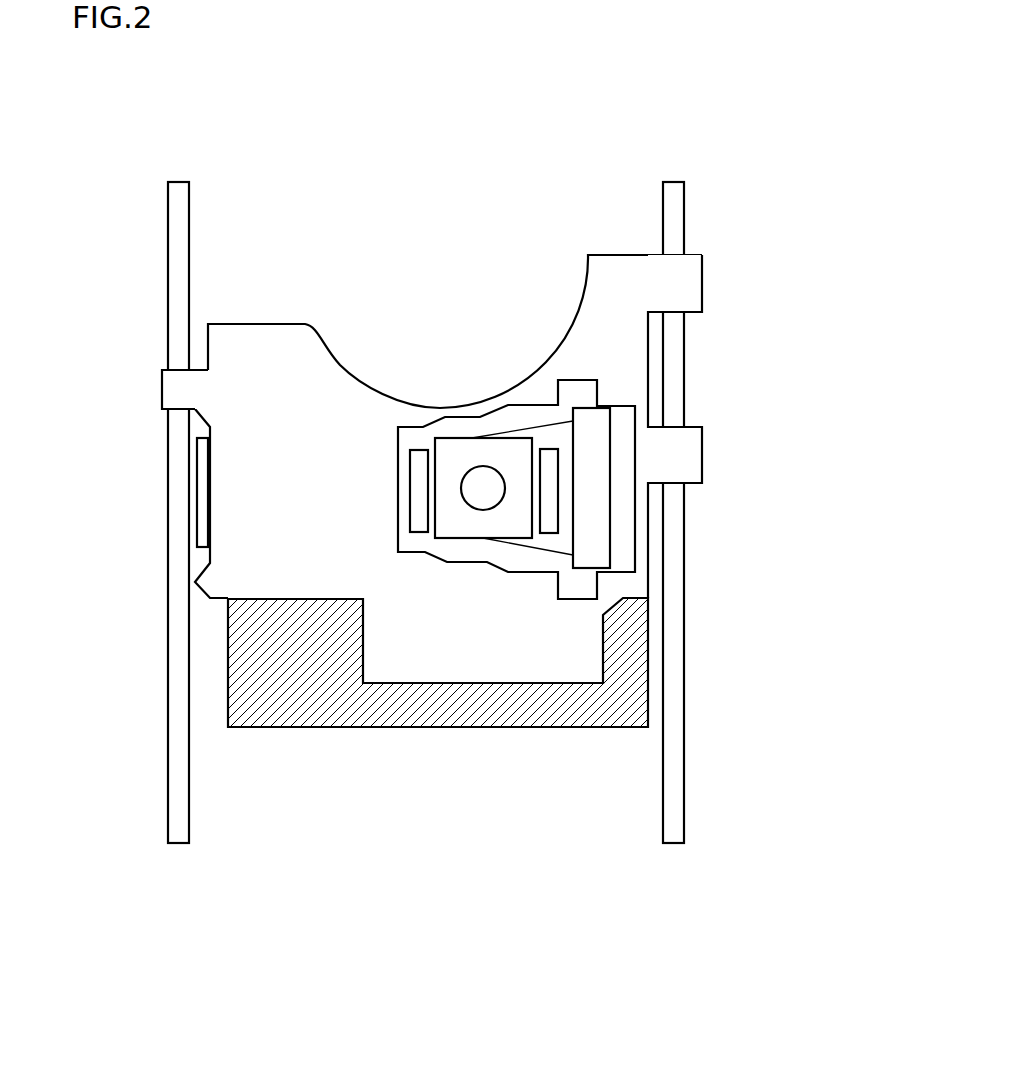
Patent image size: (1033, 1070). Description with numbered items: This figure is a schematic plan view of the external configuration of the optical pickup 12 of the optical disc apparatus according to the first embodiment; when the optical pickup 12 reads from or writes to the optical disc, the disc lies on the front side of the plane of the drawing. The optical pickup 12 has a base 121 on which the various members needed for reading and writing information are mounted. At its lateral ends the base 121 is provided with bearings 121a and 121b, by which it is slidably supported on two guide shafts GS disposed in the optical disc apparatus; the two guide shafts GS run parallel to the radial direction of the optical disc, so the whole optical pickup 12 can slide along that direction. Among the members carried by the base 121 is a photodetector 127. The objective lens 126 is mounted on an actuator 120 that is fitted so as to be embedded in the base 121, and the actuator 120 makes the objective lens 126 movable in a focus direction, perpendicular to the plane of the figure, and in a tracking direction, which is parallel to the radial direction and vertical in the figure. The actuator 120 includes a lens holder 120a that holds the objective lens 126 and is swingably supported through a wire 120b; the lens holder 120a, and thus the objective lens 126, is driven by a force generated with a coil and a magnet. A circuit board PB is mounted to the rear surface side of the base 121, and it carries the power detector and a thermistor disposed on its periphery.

The optical pickup 12 is at (485, 173).
The base 121 is at (607, 268).
The bearing 121a is at (690, 295).
The bearing 121b is at (173, 392).
The photodetector 127 is at (203, 502).
The actuator 120 is at (471, 430).
The lens holder 120a is at (445, 463).
The wire 120b is at (540, 422).
The objective lens 126 is at (505, 490).
The circuit board PB is at (632, 697).
The guide shafts GS is at (178, 800).